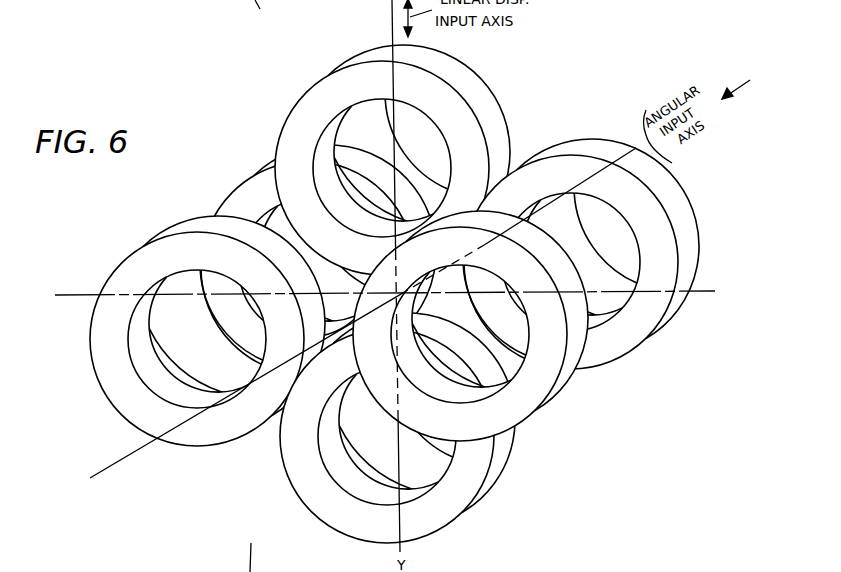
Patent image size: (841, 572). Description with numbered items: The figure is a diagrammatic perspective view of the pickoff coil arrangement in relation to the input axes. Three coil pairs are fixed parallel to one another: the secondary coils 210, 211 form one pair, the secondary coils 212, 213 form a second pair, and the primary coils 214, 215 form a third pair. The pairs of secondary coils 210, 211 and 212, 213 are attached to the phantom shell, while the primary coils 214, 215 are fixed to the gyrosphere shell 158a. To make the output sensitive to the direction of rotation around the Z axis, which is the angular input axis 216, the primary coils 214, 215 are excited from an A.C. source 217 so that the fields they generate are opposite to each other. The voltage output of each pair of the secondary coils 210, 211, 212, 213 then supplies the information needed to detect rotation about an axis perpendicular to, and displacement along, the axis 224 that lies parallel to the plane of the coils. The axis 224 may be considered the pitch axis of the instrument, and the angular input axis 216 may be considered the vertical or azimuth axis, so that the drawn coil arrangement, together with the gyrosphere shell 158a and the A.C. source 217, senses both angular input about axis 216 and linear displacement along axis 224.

The secondary coil 210 is at (567, 372).
The secondary coil 211 is at (100, 357).
The secondary coil 212 is at (623, 337).
The secondary coil 213 is at (250, 192).
The primary coil 214 is at (455, 95).
The primary coil 215 is at (443, 514).
The angular input axis 216 is at (125, 462).
The A.C. source 217 is at (212, 571).
The axis parallel to the plane of coils 224 is at (70, 292).
The gyrosphere shell 158a is at (277, 9).